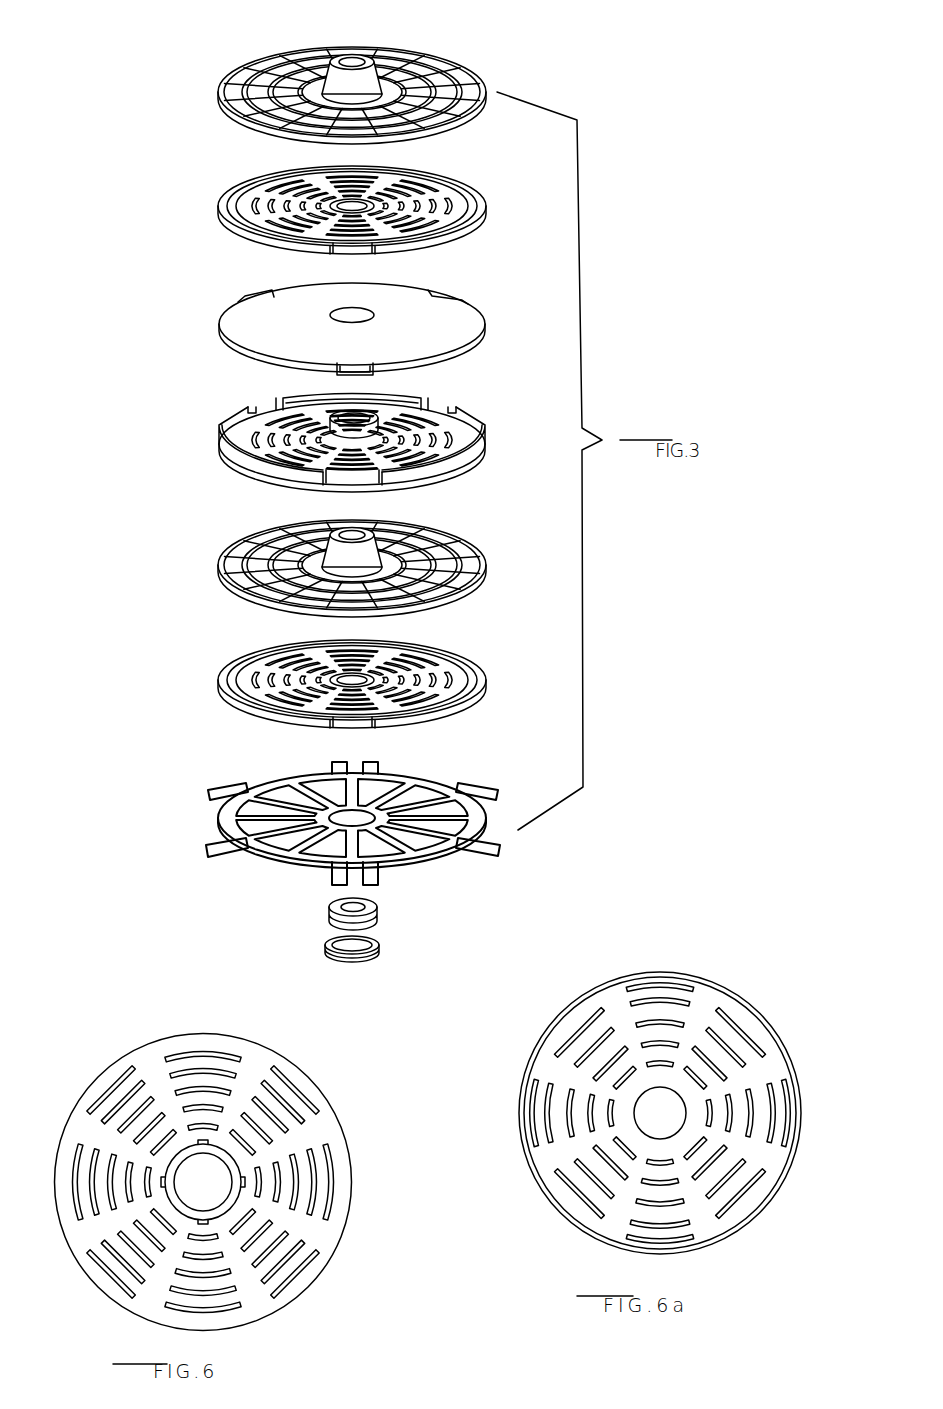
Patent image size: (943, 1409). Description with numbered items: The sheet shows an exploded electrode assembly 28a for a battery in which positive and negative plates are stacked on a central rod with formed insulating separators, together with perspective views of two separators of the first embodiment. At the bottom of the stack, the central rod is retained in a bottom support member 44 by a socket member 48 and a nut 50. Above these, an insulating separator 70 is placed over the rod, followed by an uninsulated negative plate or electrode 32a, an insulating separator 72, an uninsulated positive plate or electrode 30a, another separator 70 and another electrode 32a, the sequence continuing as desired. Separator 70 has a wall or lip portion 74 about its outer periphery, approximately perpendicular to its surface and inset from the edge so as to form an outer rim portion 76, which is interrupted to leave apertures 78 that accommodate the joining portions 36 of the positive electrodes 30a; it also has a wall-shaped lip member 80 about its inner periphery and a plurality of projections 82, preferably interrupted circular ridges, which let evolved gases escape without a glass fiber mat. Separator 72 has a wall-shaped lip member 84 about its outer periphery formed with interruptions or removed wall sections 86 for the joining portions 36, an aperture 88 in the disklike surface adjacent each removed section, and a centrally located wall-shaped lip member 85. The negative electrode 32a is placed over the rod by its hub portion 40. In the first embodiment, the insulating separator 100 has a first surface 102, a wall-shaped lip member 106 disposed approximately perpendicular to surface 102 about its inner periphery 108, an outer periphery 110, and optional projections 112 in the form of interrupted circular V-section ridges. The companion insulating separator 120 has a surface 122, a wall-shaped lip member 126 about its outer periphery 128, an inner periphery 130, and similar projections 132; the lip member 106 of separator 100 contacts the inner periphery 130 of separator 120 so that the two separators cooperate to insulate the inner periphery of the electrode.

In FIG. 3, the electrode assembly 28a is at (602, 440).
In FIG. 3, the positive plate or electrode 30a is at (380, 325).
In FIG. 3, the negative plate or electrode 32a is at (383, 319).
In FIG. 3, the joining portions 36 is at (243, 293).
In FIG. 3, the hub portion 40 is at (370, 73).
In FIG. 3, the bottom support member 44 is at (442, 787).
In FIG. 3, the socket member 48 is at (375, 913).
In FIG. 3, the nut 50 is at (390, 946).
In FIG. 3, the insulating separator 70 is at (397, 447).
In FIG. 3, the insulating separator 72 is at (363, 439).
In FIG. 3, the wall or lip portion 74 is at (440, 178).
In FIG. 3, the outer rim portion 76 is at (463, 220).
In FIG. 3, the apertures 78 is at (357, 253).
In FIG. 3, the wall-shaped lip member 80 is at (362, 197).
In FIG. 3, the projections 82 is at (303, 195).
In FIG. 3, the wall-shaped lip member 84 is at (470, 425).
In FIG. 3, the wall-shaped lip member 85 is at (375, 424).
In FIG. 3, the interruptions or removed wall sections 86 is at (232, 416).
In FIG. 3, the aperture 88 is at (255, 408).
In FIG. 6, the insulating separator 100 is at (229, 1158).
In FIG. 6, the first surface 102 is at (315, 1233).
In FIG. 6, the wall-shaped lip member 106 is at (217, 1170).
In FIG. 6, the inner periphery 108 is at (223, 1174).
In FIG. 6, the outer periphery 110 is at (290, 1303).
In FIG. 6, the projections 112 is at (320, 1176).
In FIG. 6A, the insulating separator 120 is at (682, 1079).
In FIG. 6A, the surface 122 is at (707, 1003).
In FIG. 6A, the wall-shaped lip member 126 is at (773, 1039).
In FIG. 6A, the outer periphery 128 is at (799, 1144).
In FIG. 6A, the inner periphery 130 is at (643, 1127).
In FIG. 6A, the projections 132 is at (564, 1103).